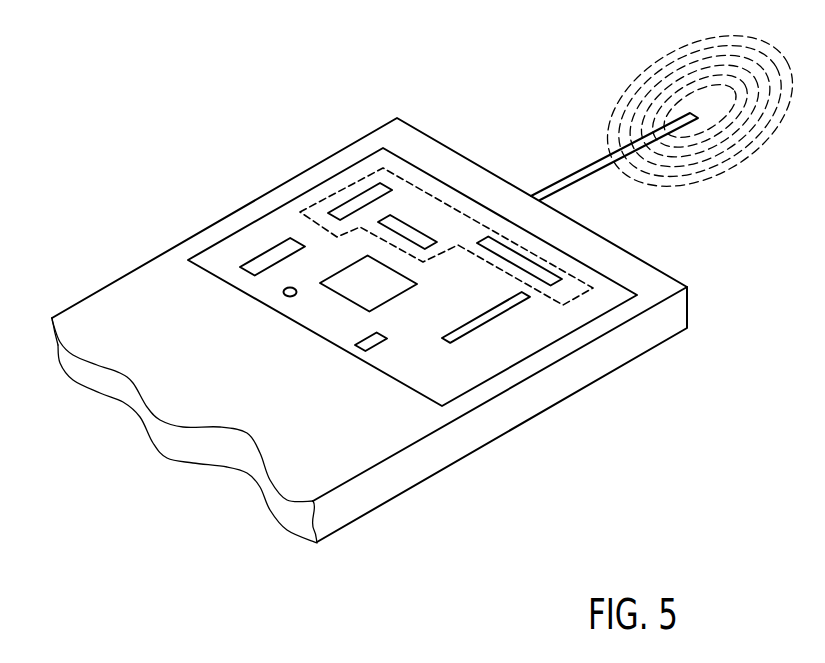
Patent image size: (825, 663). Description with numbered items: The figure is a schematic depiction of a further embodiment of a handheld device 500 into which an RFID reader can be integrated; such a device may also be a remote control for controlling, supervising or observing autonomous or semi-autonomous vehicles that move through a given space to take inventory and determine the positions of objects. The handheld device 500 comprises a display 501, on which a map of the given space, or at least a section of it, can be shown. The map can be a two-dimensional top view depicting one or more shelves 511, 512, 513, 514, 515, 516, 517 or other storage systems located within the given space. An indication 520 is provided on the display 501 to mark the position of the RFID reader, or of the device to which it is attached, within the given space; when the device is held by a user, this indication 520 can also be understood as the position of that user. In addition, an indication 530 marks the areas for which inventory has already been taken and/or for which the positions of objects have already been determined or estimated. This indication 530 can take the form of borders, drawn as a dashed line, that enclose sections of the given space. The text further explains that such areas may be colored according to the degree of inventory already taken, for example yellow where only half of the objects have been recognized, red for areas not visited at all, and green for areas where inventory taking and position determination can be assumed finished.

The handheld device 500 is at (692, 383).
The display 501 is at (287, 203).
The shelf 511 is at (227, 263).
The shelf 512 is at (368, 193).
The shelf 513 is at (400, 227).
The shelf 514 is at (367, 302).
The shelf 515 is at (517, 306).
The shelf 516 is at (553, 273).
The shelf 517 is at (360, 347).
The indication 520 is at (283, 292).
The indication 530 is at (463, 223).